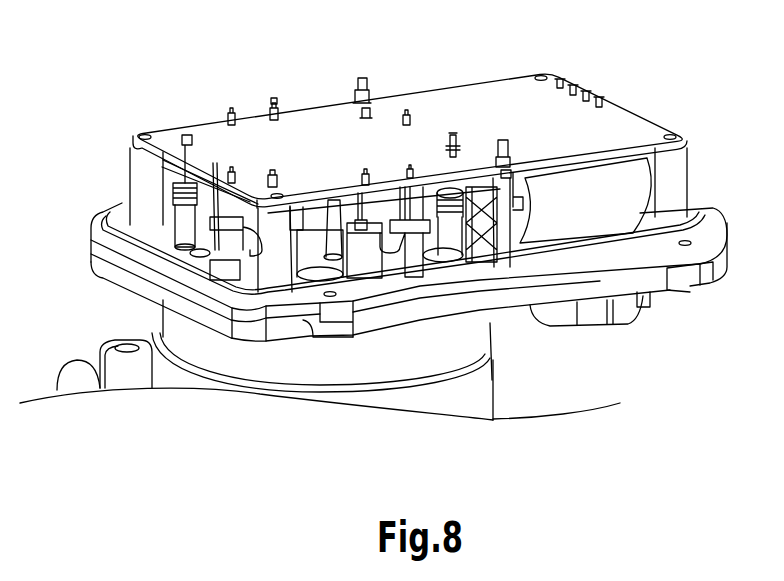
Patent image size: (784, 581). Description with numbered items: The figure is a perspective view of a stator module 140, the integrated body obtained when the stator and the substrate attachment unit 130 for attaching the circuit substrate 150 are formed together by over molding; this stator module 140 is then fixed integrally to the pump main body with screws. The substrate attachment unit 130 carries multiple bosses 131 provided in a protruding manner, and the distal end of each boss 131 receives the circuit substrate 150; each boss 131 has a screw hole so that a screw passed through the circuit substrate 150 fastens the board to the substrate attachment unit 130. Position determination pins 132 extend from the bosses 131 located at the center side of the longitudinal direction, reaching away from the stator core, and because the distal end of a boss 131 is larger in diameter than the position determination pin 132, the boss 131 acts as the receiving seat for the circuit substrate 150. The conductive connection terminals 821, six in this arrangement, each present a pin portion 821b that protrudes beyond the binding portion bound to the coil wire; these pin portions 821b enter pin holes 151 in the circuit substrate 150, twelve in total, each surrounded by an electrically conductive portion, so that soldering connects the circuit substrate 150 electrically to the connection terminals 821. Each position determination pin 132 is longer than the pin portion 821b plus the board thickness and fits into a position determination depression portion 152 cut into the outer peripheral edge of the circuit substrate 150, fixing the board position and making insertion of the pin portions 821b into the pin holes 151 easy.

The substrate attachment unit 130 is at (705, 198).
The boss 131 is at (140, 175).
The position determination pin 132 is at (362, 77).
The stator module 140 is at (148, 313).
The circuit substrate 150 is at (625, 95).
The pin hole 151 is at (279, 110).
The position determination depression portion 152 is at (370, 100).
The connection terminal 821 is at (447, 273).
The pin portion 821b is at (276, 112).